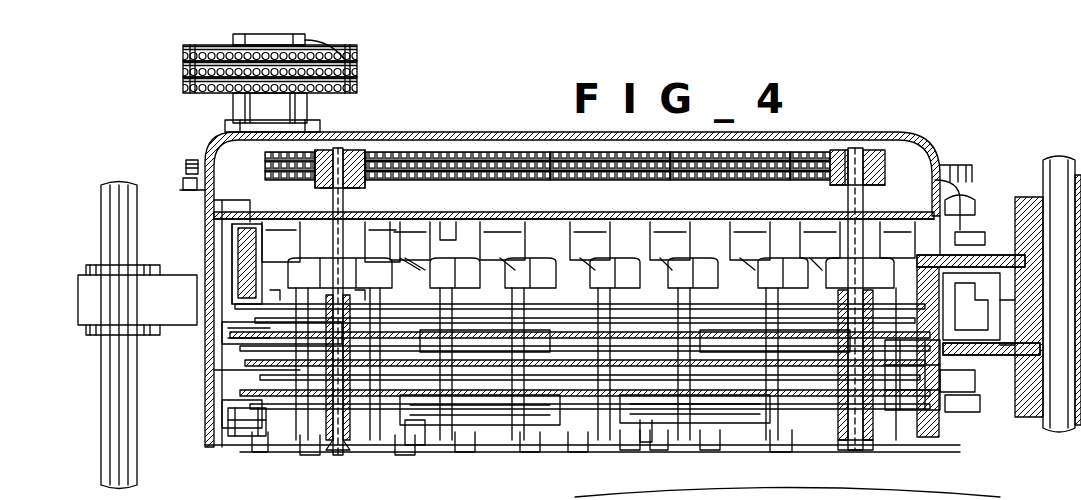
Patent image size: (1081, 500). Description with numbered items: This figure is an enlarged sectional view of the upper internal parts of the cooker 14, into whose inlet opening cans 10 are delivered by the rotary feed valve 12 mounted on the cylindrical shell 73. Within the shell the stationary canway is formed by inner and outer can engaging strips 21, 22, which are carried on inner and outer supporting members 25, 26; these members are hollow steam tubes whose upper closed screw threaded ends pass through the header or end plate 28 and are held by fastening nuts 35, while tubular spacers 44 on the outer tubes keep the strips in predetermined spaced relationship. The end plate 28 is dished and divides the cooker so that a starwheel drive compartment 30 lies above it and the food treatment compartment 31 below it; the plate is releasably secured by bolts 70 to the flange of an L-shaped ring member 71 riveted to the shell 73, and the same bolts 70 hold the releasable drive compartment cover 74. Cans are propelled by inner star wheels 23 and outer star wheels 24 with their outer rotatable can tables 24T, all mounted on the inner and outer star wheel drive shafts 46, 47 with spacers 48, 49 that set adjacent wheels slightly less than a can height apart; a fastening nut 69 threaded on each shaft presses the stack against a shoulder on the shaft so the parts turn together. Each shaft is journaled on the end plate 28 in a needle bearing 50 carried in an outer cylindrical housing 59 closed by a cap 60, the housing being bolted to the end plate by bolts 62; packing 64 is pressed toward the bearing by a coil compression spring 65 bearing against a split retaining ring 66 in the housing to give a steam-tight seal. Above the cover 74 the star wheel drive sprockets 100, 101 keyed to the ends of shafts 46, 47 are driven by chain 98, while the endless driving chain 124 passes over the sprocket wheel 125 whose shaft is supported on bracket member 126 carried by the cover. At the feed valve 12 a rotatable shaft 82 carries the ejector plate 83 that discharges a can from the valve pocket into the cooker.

The cans 10 is at (905, 395).
The rotary feed valve 12 is at (1030, 418).
The cooker 14 is at (880, 135).
The inner can engaging strip 21 is at (420, 325).
The outer can engaging strip 22 is at (225, 340).
The inner star wheels 23 is at (298, 320).
The outer star wheels 24 is at (255, 325).
The outer rotatable can table 24T is at (240, 370).
The inner supporting member 25 is at (415, 445).
The outer supporting member 26 is at (242, 300).
The header or end plate 28 is at (511, 250).
The starwheel drive compartment 30 is at (552, 148).
The food treatment compartment 31 is at (930, 240).
The fastening nut 35 is at (703, 197).
The tubular spacer 44 is at (232, 245).
The inner star wheel drive shaft 46 is at (405, 456).
The outer star wheel drive shaft 47 is at (850, 428).
The spacer 48 is at (645, 442).
The spacer 49 is at (360, 445).
The needle bearing 50 is at (310, 213).
The outer cylindrical housing 59 is at (407, 160).
The cap 60 is at (360, 153).
The bolts 62 is at (565, 257).
The packing 64 is at (330, 236).
The coil compression spring 65 is at (282, 260).
The split retaining ring 66 is at (368, 240).
The fastening nut 69 is at (358, 272).
The bolts 70 is at (192, 160).
The L-shaped ring member 71 is at (183, 186).
The cylindrical shell 73 is at (212, 370).
The drive compartment cover 74 is at (475, 140).
The rotatable shaft 82 is at (1015, 362).
The ejector plate 83 is at (955, 305).
The chain 98 is at (800, 160).
The inner star wheel drive sprocket 100 is at (322, 177).
The outer star wheel drive sprocket 101 is at (835, 160).
The endless driving chain 124 is at (185, 62).
The sprocket wheel 125 is at (352, 52).
The bracket member 126 is at (360, 120).